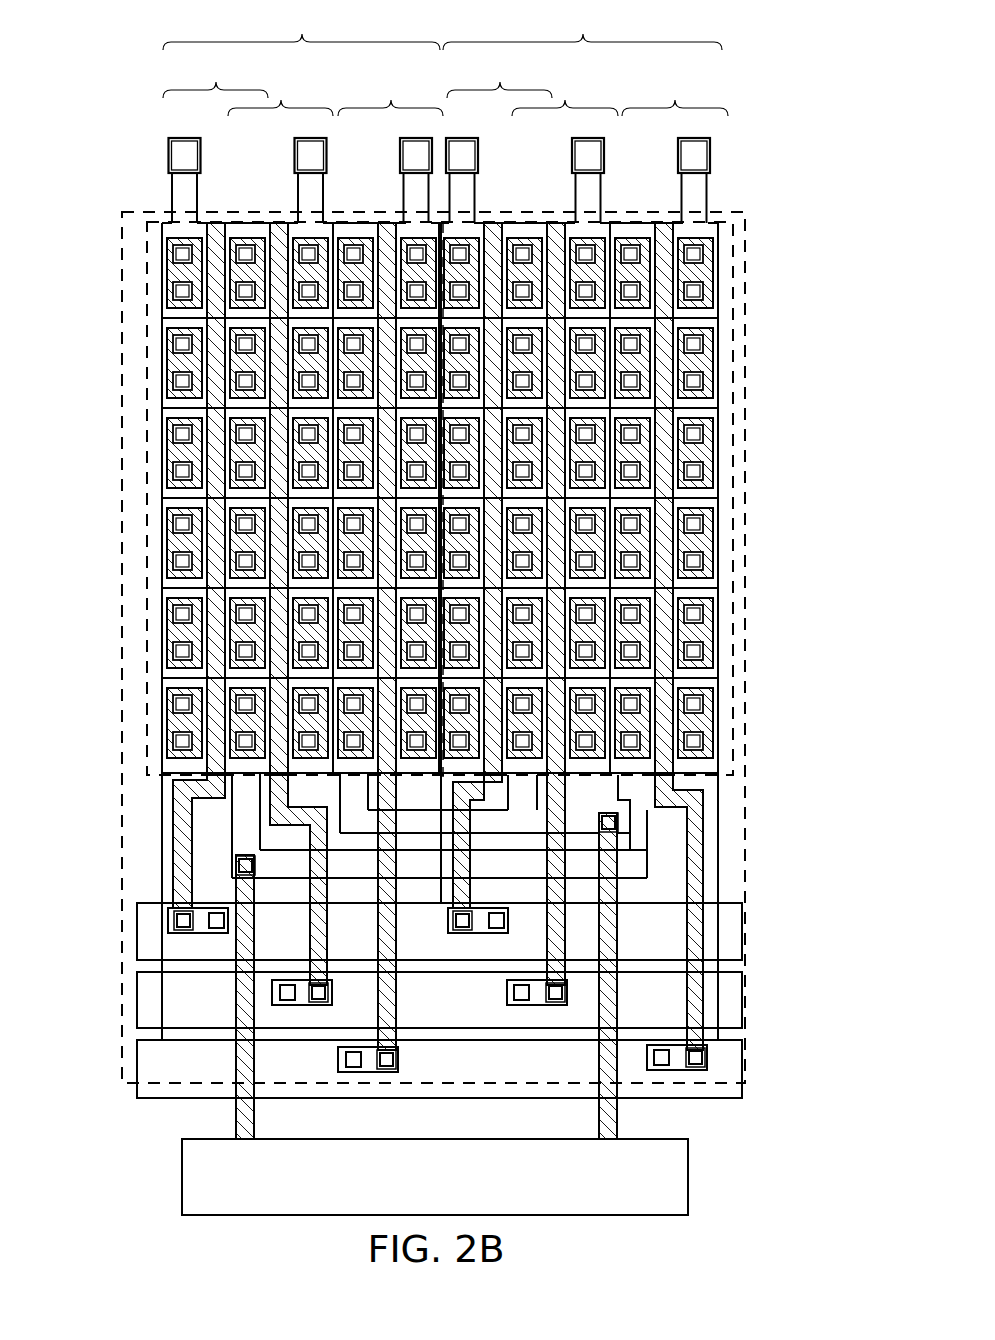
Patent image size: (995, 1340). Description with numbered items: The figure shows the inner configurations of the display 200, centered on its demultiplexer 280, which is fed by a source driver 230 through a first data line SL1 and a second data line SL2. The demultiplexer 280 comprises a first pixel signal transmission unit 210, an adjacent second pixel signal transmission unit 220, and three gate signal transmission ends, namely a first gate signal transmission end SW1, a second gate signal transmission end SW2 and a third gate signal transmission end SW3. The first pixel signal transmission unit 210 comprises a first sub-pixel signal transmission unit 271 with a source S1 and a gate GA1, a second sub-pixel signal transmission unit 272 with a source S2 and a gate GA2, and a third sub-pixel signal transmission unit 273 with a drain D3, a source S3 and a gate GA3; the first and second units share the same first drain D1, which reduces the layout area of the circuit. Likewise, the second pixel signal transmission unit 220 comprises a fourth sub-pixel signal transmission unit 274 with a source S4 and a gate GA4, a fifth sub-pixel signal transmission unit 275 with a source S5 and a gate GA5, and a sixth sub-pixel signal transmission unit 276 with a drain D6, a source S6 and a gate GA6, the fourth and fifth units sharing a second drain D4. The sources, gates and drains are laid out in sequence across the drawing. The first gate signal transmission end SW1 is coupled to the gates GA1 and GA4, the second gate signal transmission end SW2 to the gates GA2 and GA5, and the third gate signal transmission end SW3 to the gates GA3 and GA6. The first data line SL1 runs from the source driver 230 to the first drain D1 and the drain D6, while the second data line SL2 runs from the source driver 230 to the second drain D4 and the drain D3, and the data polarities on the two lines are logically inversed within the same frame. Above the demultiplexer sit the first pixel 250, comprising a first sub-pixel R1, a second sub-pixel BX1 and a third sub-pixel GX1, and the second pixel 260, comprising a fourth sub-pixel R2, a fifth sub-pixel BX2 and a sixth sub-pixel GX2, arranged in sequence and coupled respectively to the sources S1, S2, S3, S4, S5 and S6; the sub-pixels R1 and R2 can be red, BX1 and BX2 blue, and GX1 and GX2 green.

The display 200 is at (770, 140).
The first pixel signal transmission unit 210 is at (150, 222).
The second pixel signal transmission unit 220 is at (745, 247).
The source driver 230 is at (418, 1192).
The first pixel 250 is at (301, 28).
The second pixel 260 is at (582, 28).
The first sub-pixel signal transmission unit 271 is at (215, 75).
The second sub-pixel signal transmission unit 272 is at (280, 93).
The third sub-pixel signal transmission unit 273 is at (390, 93).
The fourth sub-pixel signal transmission unit 274 is at (499, 75).
The fifth sub-pixel signal transmission unit 275 is at (565, 93).
The sixth sub-pixel signal transmission unit 276 is at (675, 93).
The demultiplexer 280 is at (745, 222).
The first sub-pixel R1 is at (185, 165).
The second sub-pixel BX1 is at (310, 165).
The third sub-pixel GX1 is at (414, 165).
The fourth sub-pixel R2 is at (462, 165).
The fifth sub-pixel BX2 is at (590, 165).
The sixth sub-pixel GX2 is at (695, 165).
The source S1 is at (176, 252).
The source S2 is at (303, 345).
The source S3 is at (408, 435).
The source S4 is at (462, 345).
The source S5 is at (592, 470).
The source S6 is at (702, 378).
The first drain D1 is at (238, 380).
The drain D3 is at (338, 565).
The second drain D4 is at (527, 705).
The drain D6 is at (634, 560).
The gate GA1 is at (213, 293).
The gate GA2 is at (273, 525).
The gate GA3 is at (383, 628).
The gate GA4 is at (492, 525).
The gate GA5 is at (562, 635).
The gate GA6 is at (662, 430).
The first gate signal transmission end SW1 is at (137, 932).
The second gate signal transmission end SW2 is at (137, 1000).
The third gate signal transmission end SW3 is at (137, 1065).
The first data line SL1 is at (271, 997).
The second data line SL2 is at (633, 976).